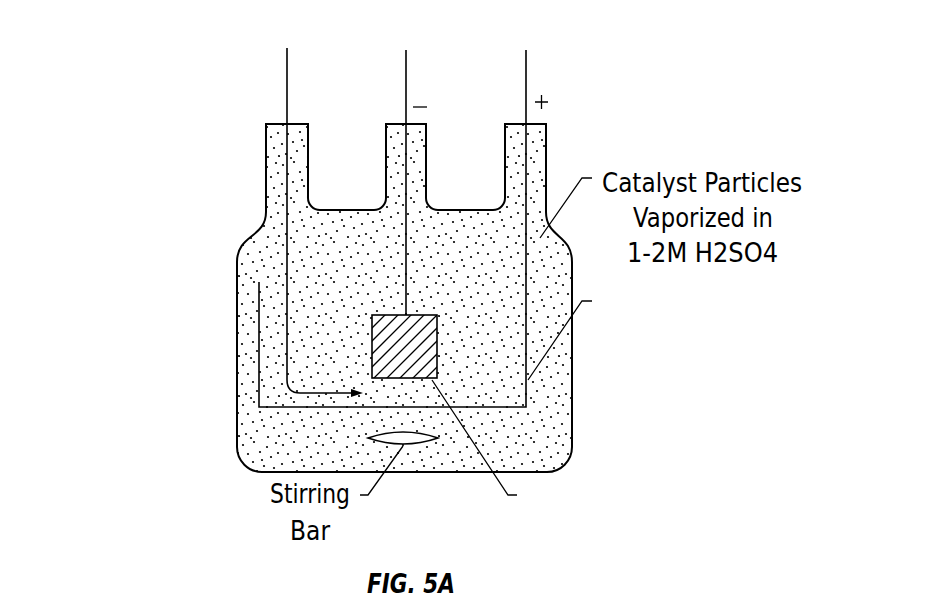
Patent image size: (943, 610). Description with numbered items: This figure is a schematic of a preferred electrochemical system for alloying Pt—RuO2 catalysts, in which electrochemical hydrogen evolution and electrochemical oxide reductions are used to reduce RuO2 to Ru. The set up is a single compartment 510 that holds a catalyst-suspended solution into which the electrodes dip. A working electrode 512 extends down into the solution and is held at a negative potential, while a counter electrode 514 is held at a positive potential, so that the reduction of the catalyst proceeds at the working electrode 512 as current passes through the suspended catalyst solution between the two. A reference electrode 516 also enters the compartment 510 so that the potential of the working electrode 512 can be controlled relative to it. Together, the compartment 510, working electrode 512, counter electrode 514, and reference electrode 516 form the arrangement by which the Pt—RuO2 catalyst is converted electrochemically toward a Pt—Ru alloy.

The electrochemical cell vessel 510 is at (237, 390).
The working electrode 512 is at (406, 108).
The counter electrode 514 is at (526, 107).
The reference electrode 516 is at (286, 110).